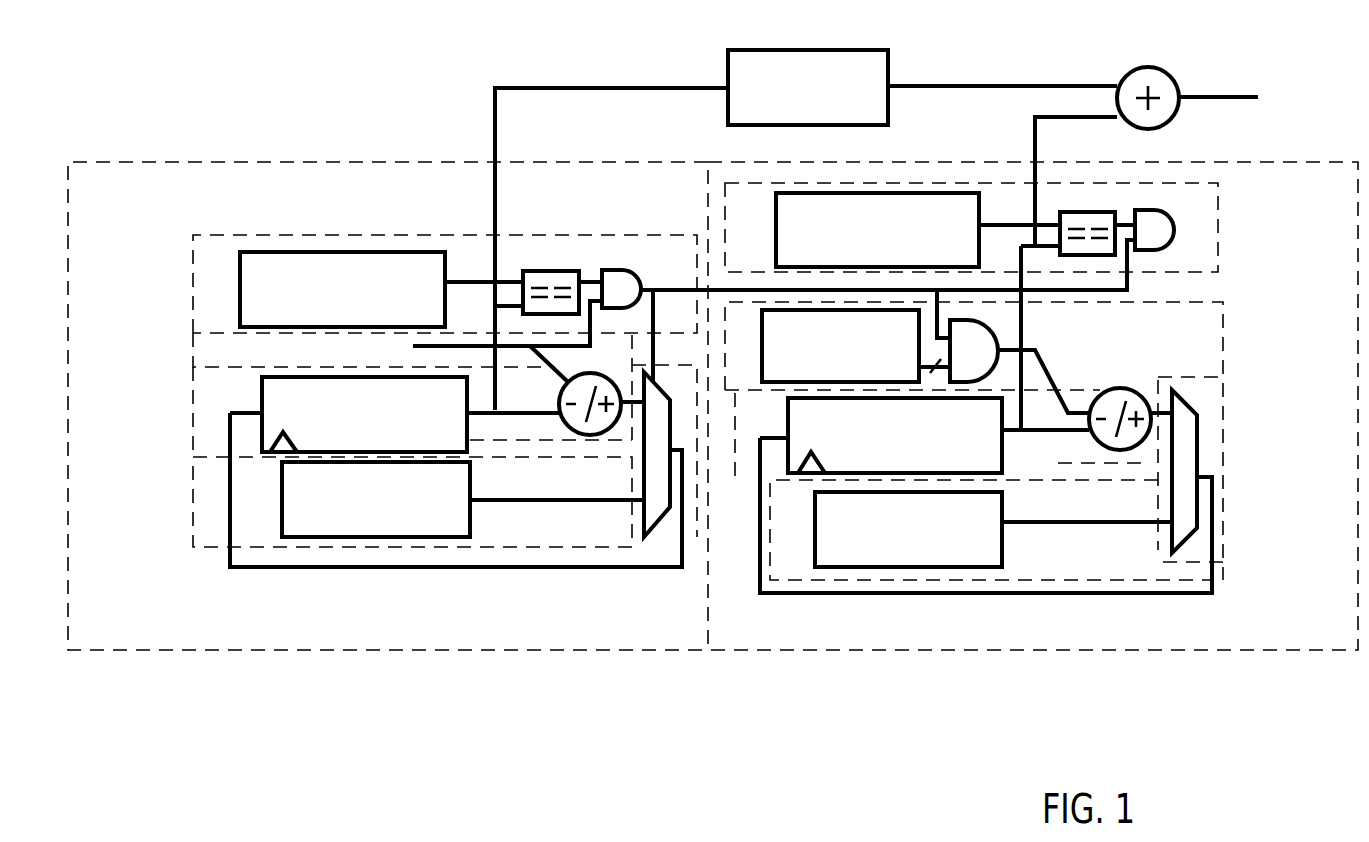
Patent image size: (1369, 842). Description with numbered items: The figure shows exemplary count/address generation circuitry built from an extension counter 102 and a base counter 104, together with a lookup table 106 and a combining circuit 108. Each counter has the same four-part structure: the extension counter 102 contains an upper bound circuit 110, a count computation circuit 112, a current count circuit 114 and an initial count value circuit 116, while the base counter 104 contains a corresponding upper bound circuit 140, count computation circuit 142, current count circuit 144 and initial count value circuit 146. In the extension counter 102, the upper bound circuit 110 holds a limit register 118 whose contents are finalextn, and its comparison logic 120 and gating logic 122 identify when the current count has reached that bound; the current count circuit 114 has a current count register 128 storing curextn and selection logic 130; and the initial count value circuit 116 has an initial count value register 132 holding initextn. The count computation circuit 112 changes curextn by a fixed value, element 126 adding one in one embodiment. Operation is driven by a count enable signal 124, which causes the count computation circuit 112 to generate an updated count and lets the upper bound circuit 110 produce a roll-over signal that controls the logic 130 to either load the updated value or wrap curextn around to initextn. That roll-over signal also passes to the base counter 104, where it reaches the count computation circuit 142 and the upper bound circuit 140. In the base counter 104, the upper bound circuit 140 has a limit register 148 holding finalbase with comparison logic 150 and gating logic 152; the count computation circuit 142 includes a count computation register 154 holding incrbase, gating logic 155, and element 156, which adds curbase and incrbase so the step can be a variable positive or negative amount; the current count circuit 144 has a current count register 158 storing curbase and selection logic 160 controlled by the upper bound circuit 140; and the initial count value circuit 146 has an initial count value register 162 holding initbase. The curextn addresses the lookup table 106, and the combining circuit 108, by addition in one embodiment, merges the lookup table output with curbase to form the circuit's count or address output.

The extension counter 102 is at (312, 650).
The base counter 104 is at (932, 650).
The lookup table 106 is at (806, 214).
The combining circuit 108 is at (1172, 56).
The upper bound circuit 110 is at (193, 282).
The count computation circuit 112 is at (193, 349).
The current count circuit 114 is at (193, 432).
The initial count value circuit 116 is at (193, 517).
The limit register 118 is at (430, 250).
The comparator 120 is at (549, 250).
The AND gate 122 is at (613, 250).
The count enable signal 124 is at (368, 354).
The element 126 is at (612, 365).
The current count register 128 is at (262, 402).
The logic 130 is at (668, 400).
The initial count value register 132 is at (470, 484).
The upper bound circuit 140 is at (1218, 195).
The count computation circuit 142 is at (1230, 334).
The current count circuit 144 is at (1223, 396).
The initial count value circuit 146 is at (1239, 581).
The limit register 148 is at (776, 246).
The comparator 150 is at (1086, 194).
The AND gate 152 is at (1170, 194).
The count computation register 154 is at (762, 358).
The AND gate 155 is at (1001, 324).
The element 156 is at (1138, 383).
The current count register 158 is at (788, 415).
The logic 160 is at (1184, 416).
The initial count value register 162 is at (1002, 497).